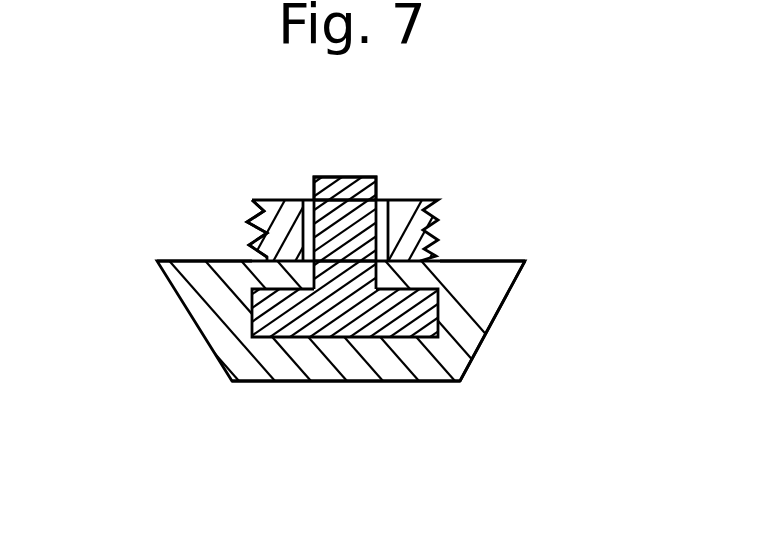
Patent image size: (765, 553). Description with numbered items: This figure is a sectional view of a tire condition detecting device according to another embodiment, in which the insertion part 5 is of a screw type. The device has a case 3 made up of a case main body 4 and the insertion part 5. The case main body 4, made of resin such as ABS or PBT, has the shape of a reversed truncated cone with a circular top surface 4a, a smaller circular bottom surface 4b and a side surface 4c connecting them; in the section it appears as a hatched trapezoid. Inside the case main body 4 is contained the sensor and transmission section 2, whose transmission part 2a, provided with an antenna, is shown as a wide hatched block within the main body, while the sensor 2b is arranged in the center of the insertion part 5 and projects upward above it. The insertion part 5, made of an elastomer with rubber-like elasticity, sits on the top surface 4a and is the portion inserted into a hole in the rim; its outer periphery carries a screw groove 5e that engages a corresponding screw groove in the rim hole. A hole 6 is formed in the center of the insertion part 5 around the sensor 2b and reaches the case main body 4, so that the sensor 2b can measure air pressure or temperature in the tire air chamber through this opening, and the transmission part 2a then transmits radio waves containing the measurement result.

The sensor and transmission section 2 is at (463, 381).
The transmission part 2a is at (396, 337).
The sensor 2b is at (338, 177).
The case 3 is at (527, 262).
The case main body 4 is at (210, 326).
The top surface 4a is at (477, 261).
The bottom surface 4b is at (330, 382).
The side surface 4c is at (493, 330).
The insertion part 5 is at (273, 201).
The screw groove 5e is at (250, 222).
The hole 6 is at (388, 202).